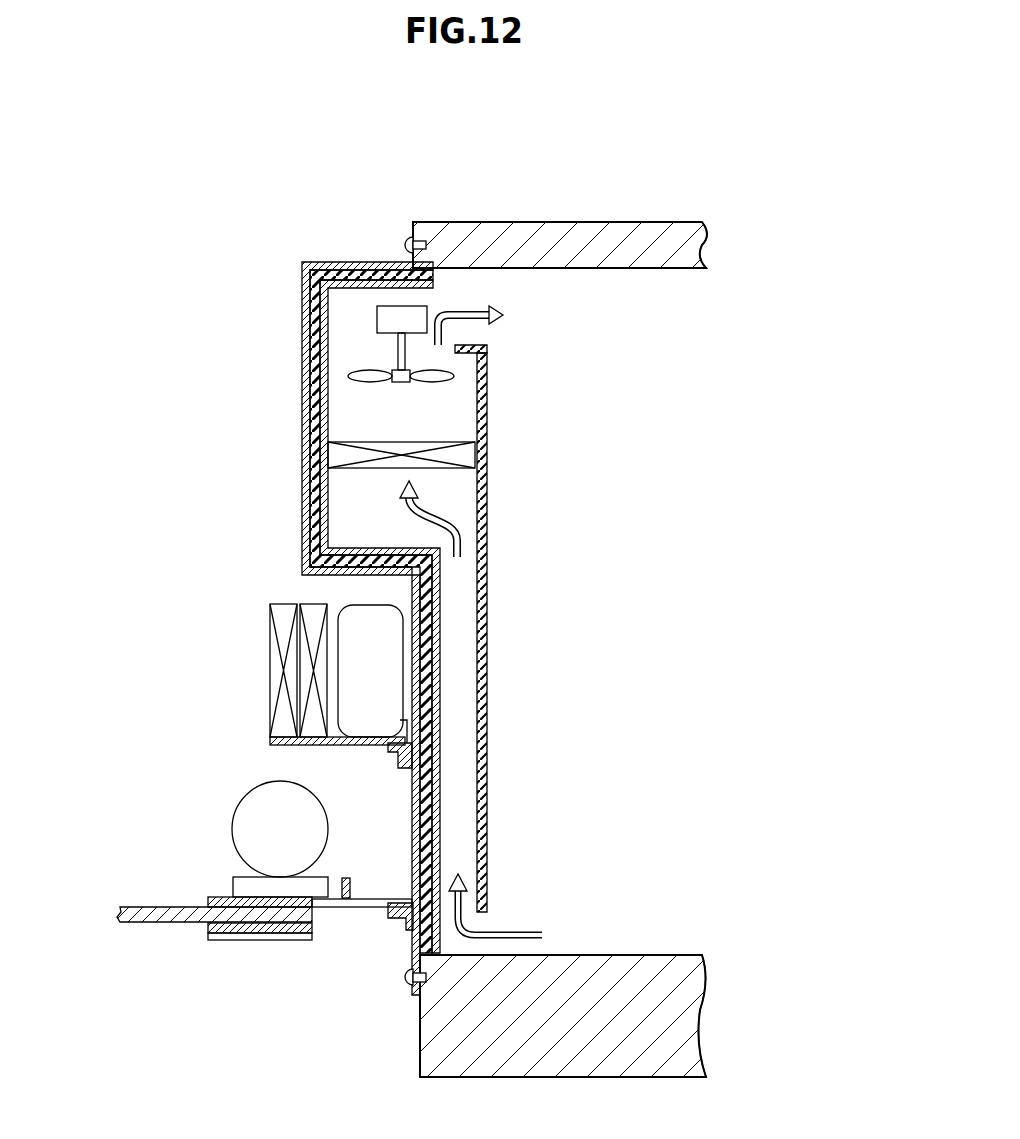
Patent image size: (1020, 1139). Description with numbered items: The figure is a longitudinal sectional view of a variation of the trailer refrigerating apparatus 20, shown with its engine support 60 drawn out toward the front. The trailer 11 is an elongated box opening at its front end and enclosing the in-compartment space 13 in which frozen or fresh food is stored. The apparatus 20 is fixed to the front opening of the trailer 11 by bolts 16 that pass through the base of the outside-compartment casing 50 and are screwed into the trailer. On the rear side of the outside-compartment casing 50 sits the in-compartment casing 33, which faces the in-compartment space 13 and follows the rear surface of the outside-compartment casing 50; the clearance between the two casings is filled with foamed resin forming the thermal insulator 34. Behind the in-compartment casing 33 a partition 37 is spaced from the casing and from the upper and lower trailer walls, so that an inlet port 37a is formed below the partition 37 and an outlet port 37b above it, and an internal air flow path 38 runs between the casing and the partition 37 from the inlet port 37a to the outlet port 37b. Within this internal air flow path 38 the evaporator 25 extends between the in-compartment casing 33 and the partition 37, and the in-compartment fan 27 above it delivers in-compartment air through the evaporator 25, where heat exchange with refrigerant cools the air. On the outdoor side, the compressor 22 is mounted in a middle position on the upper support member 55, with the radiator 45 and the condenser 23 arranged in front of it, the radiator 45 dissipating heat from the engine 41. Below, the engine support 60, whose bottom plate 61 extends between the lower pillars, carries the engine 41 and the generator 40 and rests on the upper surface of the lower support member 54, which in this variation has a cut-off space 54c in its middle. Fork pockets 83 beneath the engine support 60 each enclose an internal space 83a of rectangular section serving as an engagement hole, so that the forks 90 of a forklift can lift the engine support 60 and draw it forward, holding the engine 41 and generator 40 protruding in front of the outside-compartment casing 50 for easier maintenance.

The trailer refrigerating apparatus 20 is at (330, 552).
The trailer 11 is at (545, 220).
The in-compartment space 13 is at (610, 663).
The bolt 16 is at (407, 246).
The thermal insulator 34 is at (310, 326).
The outside-compartment casing 50 is at (305, 497).
The in-compartment casing 33 is at (370, 547).
The in-compartment fan 27 is at (390, 330).
The evaporator 25 is at (427, 443).
The partition 37 is at (499, 609).
The inlet port 37a is at (480, 923).
The outlet port 37b is at (462, 350).
The internal air flow path 38 is at (486, 514).
The condenser 23 is at (276, 622).
The radiator 45 is at (312, 602).
The compressor 22 is at (365, 688).
The upper support member 55 is at (282, 746).
The bottom plate 61 is at (390, 760).
The engine 41 is at (243, 820).
The generator 40 is at (242, 839).
The engine support 60 is at (215, 894).
The lower support member 54 is at (398, 930).
The cut-off space 54c is at (350, 908).
The fork 90 is at (155, 922).
The fork pocket 83 is at (202, 934).
The internal space 83a is at (291, 918).